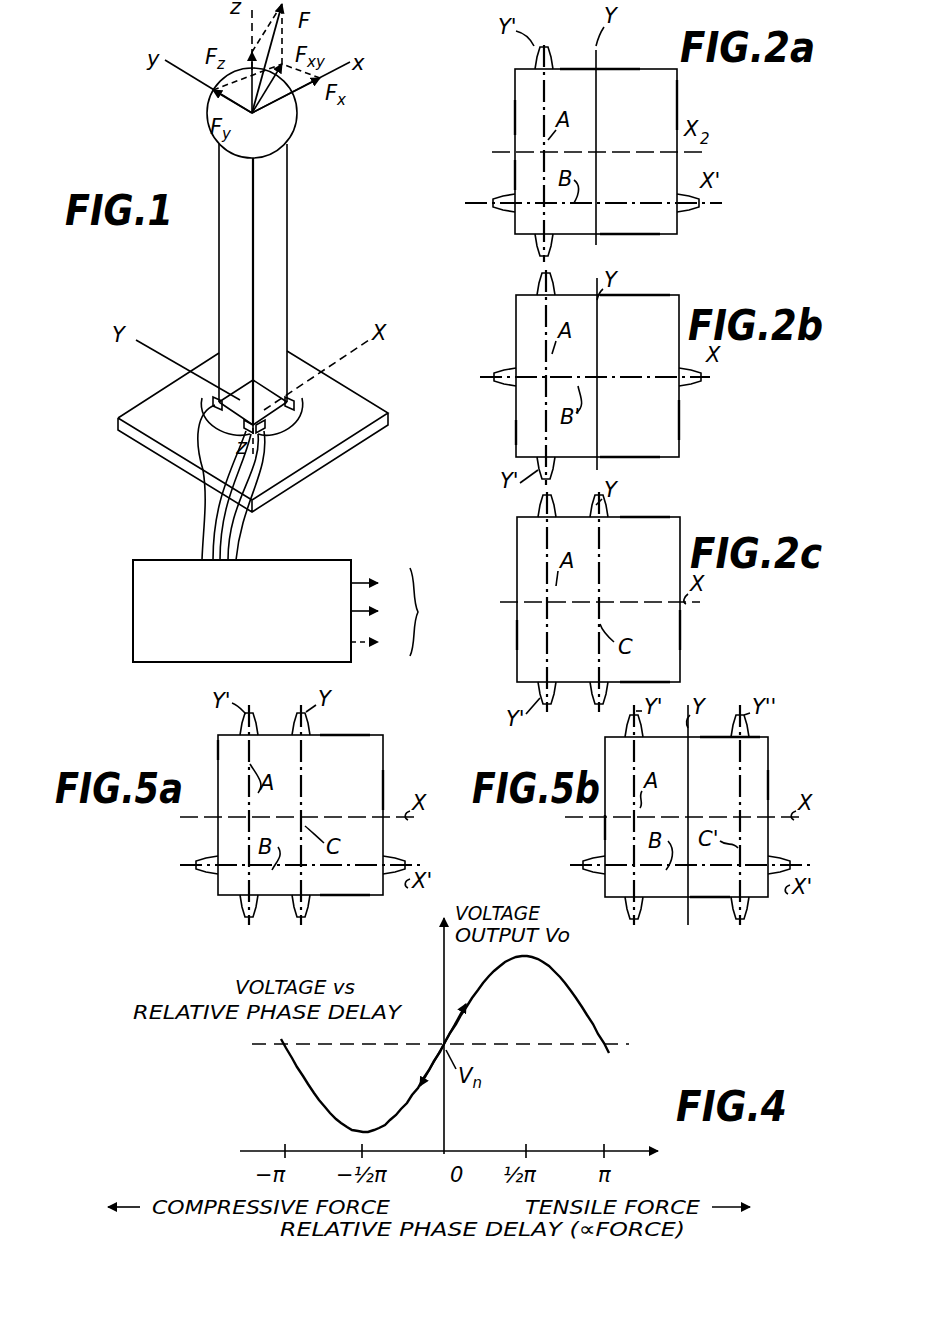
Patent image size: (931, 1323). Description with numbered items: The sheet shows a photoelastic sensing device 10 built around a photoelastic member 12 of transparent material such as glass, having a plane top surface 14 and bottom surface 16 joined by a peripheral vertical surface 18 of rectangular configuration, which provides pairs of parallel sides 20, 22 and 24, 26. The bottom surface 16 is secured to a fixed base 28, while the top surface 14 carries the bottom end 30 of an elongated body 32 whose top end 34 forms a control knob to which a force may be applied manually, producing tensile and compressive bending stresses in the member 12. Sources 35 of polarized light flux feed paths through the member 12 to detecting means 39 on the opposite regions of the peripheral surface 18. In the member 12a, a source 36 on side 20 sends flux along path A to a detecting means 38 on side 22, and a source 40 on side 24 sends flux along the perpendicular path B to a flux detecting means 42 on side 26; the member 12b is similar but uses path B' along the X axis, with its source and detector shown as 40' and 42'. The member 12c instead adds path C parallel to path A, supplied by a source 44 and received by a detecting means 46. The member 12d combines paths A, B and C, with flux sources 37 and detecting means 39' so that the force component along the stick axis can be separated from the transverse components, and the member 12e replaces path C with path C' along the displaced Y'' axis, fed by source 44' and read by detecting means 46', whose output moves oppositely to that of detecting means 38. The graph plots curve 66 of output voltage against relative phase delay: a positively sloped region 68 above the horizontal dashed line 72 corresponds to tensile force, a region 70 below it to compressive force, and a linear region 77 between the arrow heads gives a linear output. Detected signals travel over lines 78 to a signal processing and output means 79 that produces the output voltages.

In FIG. 1, the photoelastic sensing device 10 is at (180, 286).
In FIG. 1, the photoelastic member 12 is at (300, 418).
In FIG. 2A, the photoelastic member 12a is at (515, 88).
In FIG. 2B, the photoelastic member 12b is at (516, 405).
In FIG. 2C, the photoelastic member 12c is at (517, 554).
In FIG. 5A, the photoelastic member 12d is at (218, 810).
In FIG. 5B, the photoelastic member 12e is at (605, 850).
In FIG. 1, the top surface 14 is at (222, 400).
In FIG. 1, the bottom surface 16 is at (246, 432).
In FIG. 1, the peripheral vertical surface 18 is at (233, 418).
In FIG. 2A, the peripheral vertical surface 18 is at (517, 118).
In FIG. 2A, the side 20 is at (650, 236).
In FIG. 2B, the side 20 is at (660, 457).
In FIG. 2C, the side 20 is at (678, 684).
In FIG. 5A, the side 20 is at (364, 898).
In FIG. 5B, the side 20 is at (706, 898).
In FIG. 2A, the side 22 is at (632, 69).
In FIG. 2B, the side 22 is at (660, 297).
In FIG. 2C, the side 22 is at (664, 517).
In FIG. 5A, the side 22 is at (374, 736).
In FIG. 5B, the side 22 is at (774, 737).
In FIG. 1, the side 24 is at (243, 436).
In FIG. 2A, the side 24 is at (515, 173).
In FIG. 2B, the side 24 is at (516, 428).
In FIG. 2C, the side 24 is at (517, 635).
In FIG. 5A, the side 24 is at (218, 748).
In FIG. 5B, the side 24 is at (605, 825).
In FIG. 2A, the side 26 is at (680, 105).
In FIG. 2B, the side 26 is at (682, 434).
In FIG. 2C, the side 26 is at (682, 618).
In FIG. 5A, the side 26 is at (384, 794).
In FIG. 5B, the side 26 is at (770, 788).
In FIG. 1, the base 28 is at (269, 500).
In FIG. 1, the bottom end 30 is at (274, 345).
In FIG. 1, the elongated body 32 is at (287, 270).
In FIG. 1, the top end 34 is at (282, 132).
In FIG. 2A, the sources of polarized light fluxes 35 is at (604, 276).
In FIG. 1, the source 36 is at (296, 458).
In FIG. 2A, the source 36 is at (540, 248).
In FIG. 2B, the source 36 is at (530, 467).
In FIG. 2C, the source 36 is at (536, 689).
In FIG. 5A, the source 36 is at (260, 912).
In FIG. 5B, the source 36 is at (638, 916).
In FIG. 5A, the flux sources 37 is at (240, 905).
In FIG. 1, the detecting means 38 is at (240, 423).
In FIG. 2A, the detecting means 38 is at (535, 61).
In FIG. 2B, the detecting means 38 is at (535, 286).
In FIG. 2C, the detecting means 38 is at (537, 510).
In FIG. 5A, the detecting means 38 is at (258, 724).
In FIG. 5B, the detecting means 38 is at (628, 731).
In FIG. 2A, the detecting means 39 is at (571, 28).
In FIG. 5A, the detecting means 39' is at (267, 691).
In FIG. 5B, the detecting means 39' is at (755, 688).
In FIG. 1, the source 40 is at (238, 372).
In FIG. 2A, the source 40 is at (472, 222).
In FIG. 5A, the source 40 is at (174, 881).
In FIG. 5B, the source 40 is at (575, 882).
In FIG. 2B, the transmitting transducer (X axis) 40' is at (478, 359).
In FIG. 2A, the flux detecting means 42 is at (705, 222).
In FIG. 5A, the flux detecting means 42 is at (416, 848).
In FIG. 5B, the flux detecting means 42 is at (800, 849).
In FIG. 2B, the receiving transducer (X axis) 42' is at (717, 394).
In FIG. 2C, the source 44 is at (562, 717).
In FIG. 5A, the source 44 is at (324, 921).
In FIG. 5B, the source 44' is at (779, 914).
In FIG. 2C, the detecting means 46 is at (619, 499).
In FIG. 5A, the detecting means 46 is at (337, 714).
In FIG. 5B, the detecting means 46' is at (781, 709).
In FIG. 4, the curve 66 is at (574, 990).
In FIG. 4, the positively sloped region 68 is at (480, 986).
In FIG. 4, the region 70 is at (410, 1098).
In FIG. 4, the horizontal dashed line 72 is at (618, 1046).
In FIG. 4, the linear region 77 is at (426, 1056).
In FIG. 1, the lines 78 is at (232, 546).
In FIG. 1, the signal processing and output means 79 is at (146, 559).